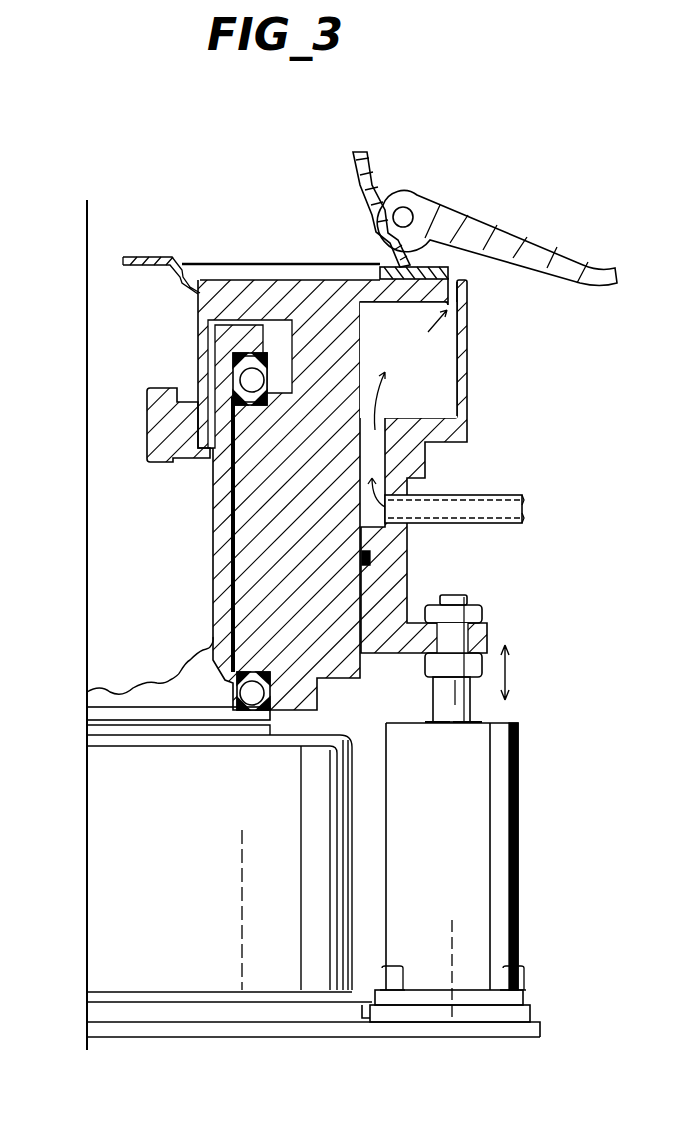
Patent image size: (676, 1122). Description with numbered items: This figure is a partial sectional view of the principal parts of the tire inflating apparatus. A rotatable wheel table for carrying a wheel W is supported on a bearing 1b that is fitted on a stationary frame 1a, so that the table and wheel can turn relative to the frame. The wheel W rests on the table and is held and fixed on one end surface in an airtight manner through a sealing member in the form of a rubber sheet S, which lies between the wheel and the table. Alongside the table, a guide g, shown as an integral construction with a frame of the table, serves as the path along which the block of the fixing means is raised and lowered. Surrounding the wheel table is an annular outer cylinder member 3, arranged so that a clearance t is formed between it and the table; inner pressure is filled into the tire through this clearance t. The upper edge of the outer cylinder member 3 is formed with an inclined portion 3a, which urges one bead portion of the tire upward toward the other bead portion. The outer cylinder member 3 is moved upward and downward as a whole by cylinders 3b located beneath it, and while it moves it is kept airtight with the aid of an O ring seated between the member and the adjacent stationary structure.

The stationary frame 1a is at (112, 808).
The bearing 1b is at (252, 372).
The annular outer cylinder member 3 is at (468, 430).
The inclined portion 3a is at (450, 274).
The cylinder 3b is at (518, 755).
The guide g is at (150, 447).
The wheel W is at (378, 166).
The rubber sheet S is at (414, 260).
The O-ring O ring is at (370, 557).
The clearance t is at (392, 341).